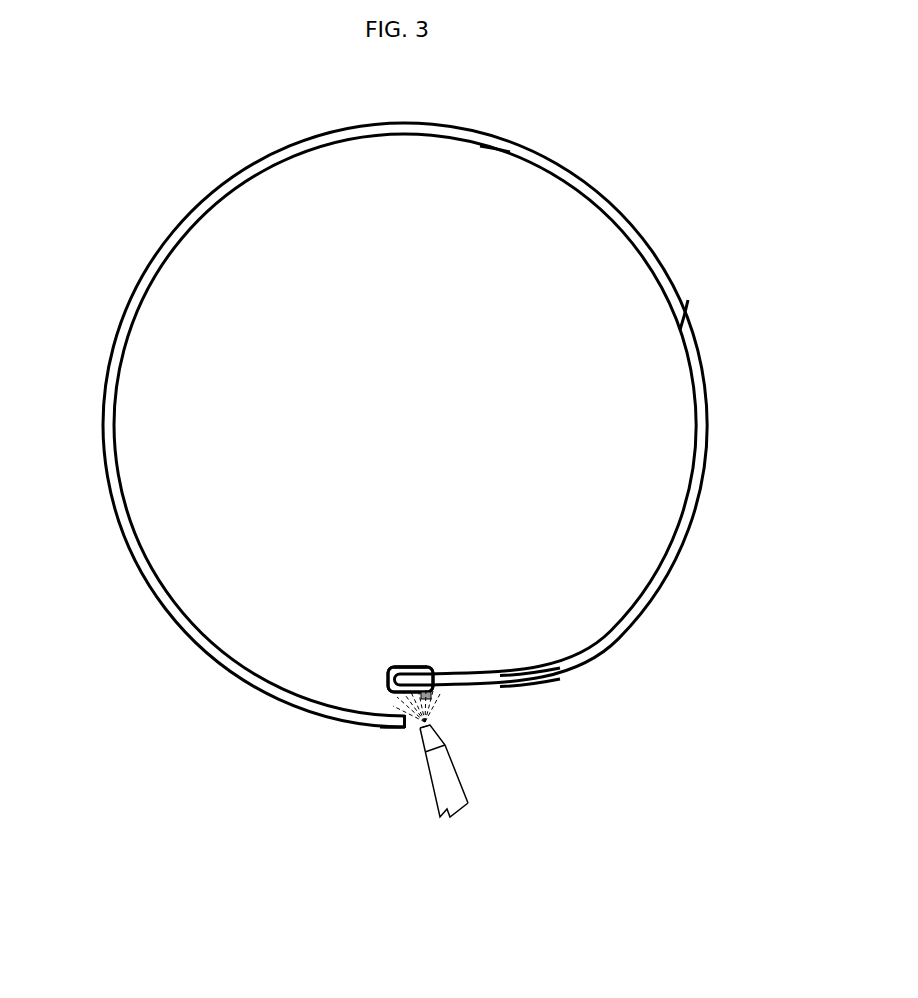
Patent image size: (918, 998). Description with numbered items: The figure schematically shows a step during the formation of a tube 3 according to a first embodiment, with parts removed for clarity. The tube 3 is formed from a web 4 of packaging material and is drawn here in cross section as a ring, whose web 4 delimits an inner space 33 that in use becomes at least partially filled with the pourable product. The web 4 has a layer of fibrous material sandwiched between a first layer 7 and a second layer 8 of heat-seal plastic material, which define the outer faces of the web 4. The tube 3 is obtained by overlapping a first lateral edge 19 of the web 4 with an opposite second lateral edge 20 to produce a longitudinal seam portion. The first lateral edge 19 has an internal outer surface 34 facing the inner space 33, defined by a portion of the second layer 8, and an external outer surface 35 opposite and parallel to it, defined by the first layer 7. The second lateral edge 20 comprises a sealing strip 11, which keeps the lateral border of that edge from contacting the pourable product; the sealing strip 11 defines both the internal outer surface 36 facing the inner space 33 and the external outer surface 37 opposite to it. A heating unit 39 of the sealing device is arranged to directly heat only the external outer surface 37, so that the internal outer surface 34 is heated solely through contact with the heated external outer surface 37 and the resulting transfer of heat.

The tube 3 is at (608, 188).
The web 4 is at (686, 310).
The inner space 33 is at (495, 195).
The second layer 8 is at (520, 662).
The first layer 7 is at (528, 684).
The internal outer surface 34 is at (404, 716).
The external outer surface 35 is at (403, 728).
The second lateral edge 20 is at (397, 650).
The sealing strip 11 is at (388, 678).
The internal outer surface 36 is at (413, 666).
The external outer surface 37 is at (428, 701).
The first lateral edge 19 is at (398, 740).
The heating unit 39 is at (452, 790).